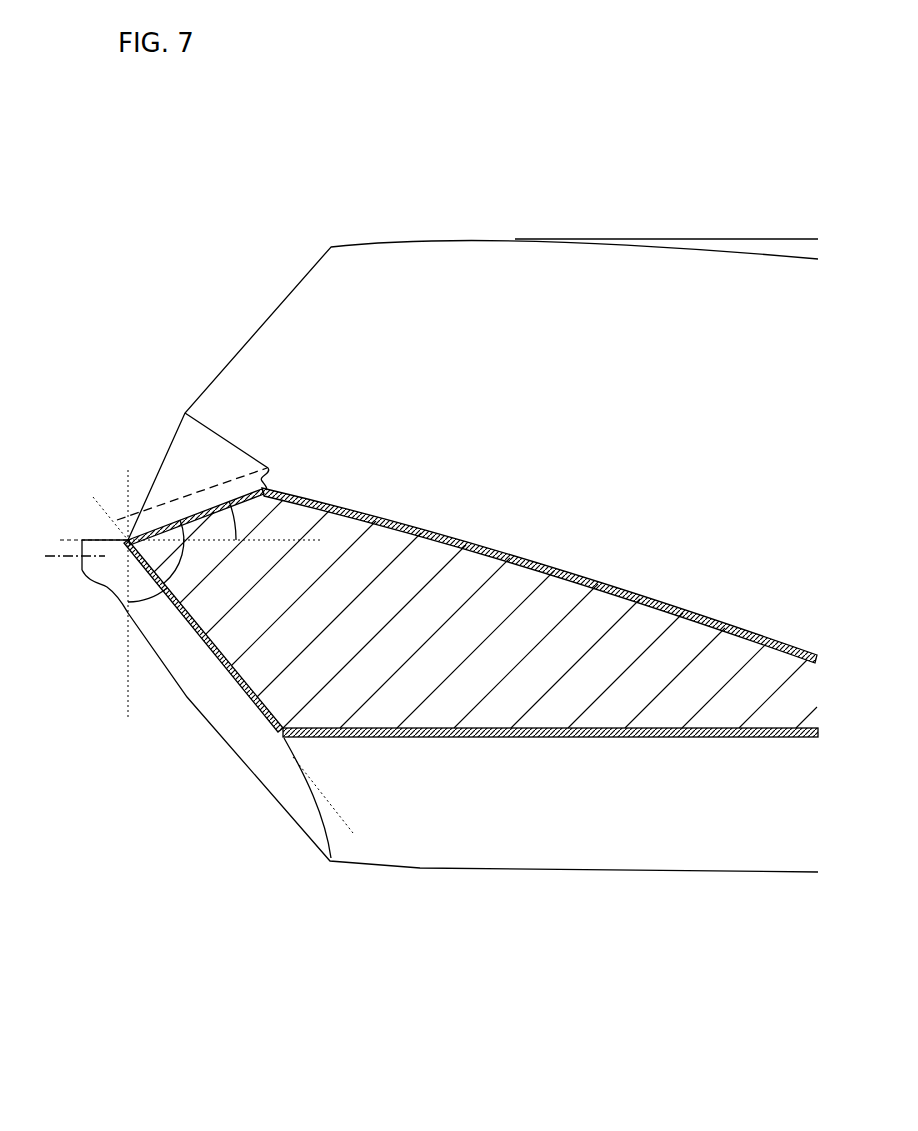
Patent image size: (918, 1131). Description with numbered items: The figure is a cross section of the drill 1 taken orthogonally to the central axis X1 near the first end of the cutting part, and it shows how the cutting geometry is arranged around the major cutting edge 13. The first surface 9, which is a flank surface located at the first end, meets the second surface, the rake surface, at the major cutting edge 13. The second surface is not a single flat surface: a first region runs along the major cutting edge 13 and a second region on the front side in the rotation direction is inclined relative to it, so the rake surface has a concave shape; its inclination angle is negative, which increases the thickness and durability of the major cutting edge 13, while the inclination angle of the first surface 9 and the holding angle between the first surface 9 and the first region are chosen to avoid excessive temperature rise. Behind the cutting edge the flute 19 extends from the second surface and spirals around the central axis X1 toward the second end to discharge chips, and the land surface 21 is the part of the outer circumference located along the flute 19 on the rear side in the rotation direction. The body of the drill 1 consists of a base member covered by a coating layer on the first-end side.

The drill 1 is at (547, 180).
The flute 19 is at (412, 305).
The land surface 21 is at (543, 825).
The first surface 9 is at (120, 585).
The major cutting edge 13 is at (104, 532).
The central axis X1 is at (183, 595).